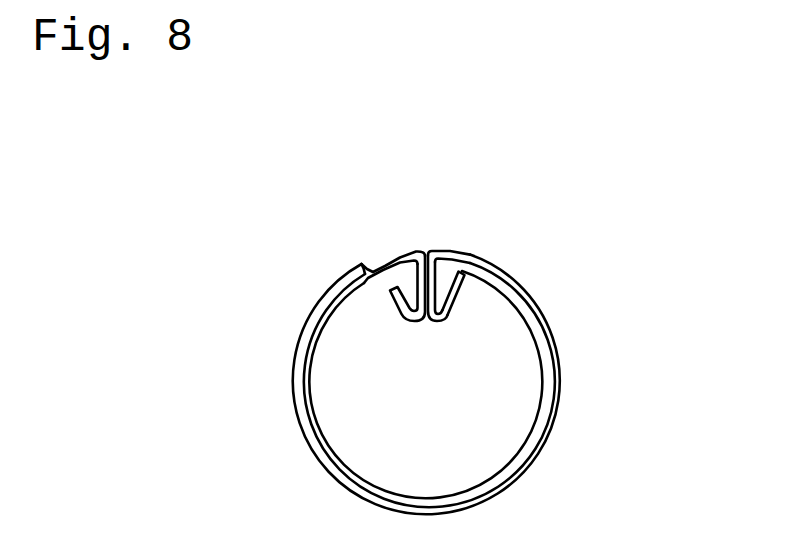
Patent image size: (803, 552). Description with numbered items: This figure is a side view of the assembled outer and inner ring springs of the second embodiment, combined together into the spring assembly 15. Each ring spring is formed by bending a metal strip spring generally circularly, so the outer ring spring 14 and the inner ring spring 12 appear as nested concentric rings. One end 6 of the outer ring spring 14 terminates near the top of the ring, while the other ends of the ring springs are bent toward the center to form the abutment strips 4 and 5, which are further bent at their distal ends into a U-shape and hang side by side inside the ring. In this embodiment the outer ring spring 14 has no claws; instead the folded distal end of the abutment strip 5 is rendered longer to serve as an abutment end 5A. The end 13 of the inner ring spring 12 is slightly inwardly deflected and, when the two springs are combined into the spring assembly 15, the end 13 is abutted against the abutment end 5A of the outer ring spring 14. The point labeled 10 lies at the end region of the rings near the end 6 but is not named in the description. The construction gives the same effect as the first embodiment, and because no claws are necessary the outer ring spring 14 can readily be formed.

The abutment strip 4 is at (417, 266).
The abutment strip 5 is at (448, 249).
The abutment end 5A is at (466, 255).
The one end of the outer ring spring 6 is at (357, 264).
The band end tip 10 is at (358, 263).
The inner ring spring 12 is at (403, 251).
The end of the inner ring spring 13 is at (462, 280).
The outer ring spring 14 is at (561, 379).
The spring assembly 15 is at (573, 311).